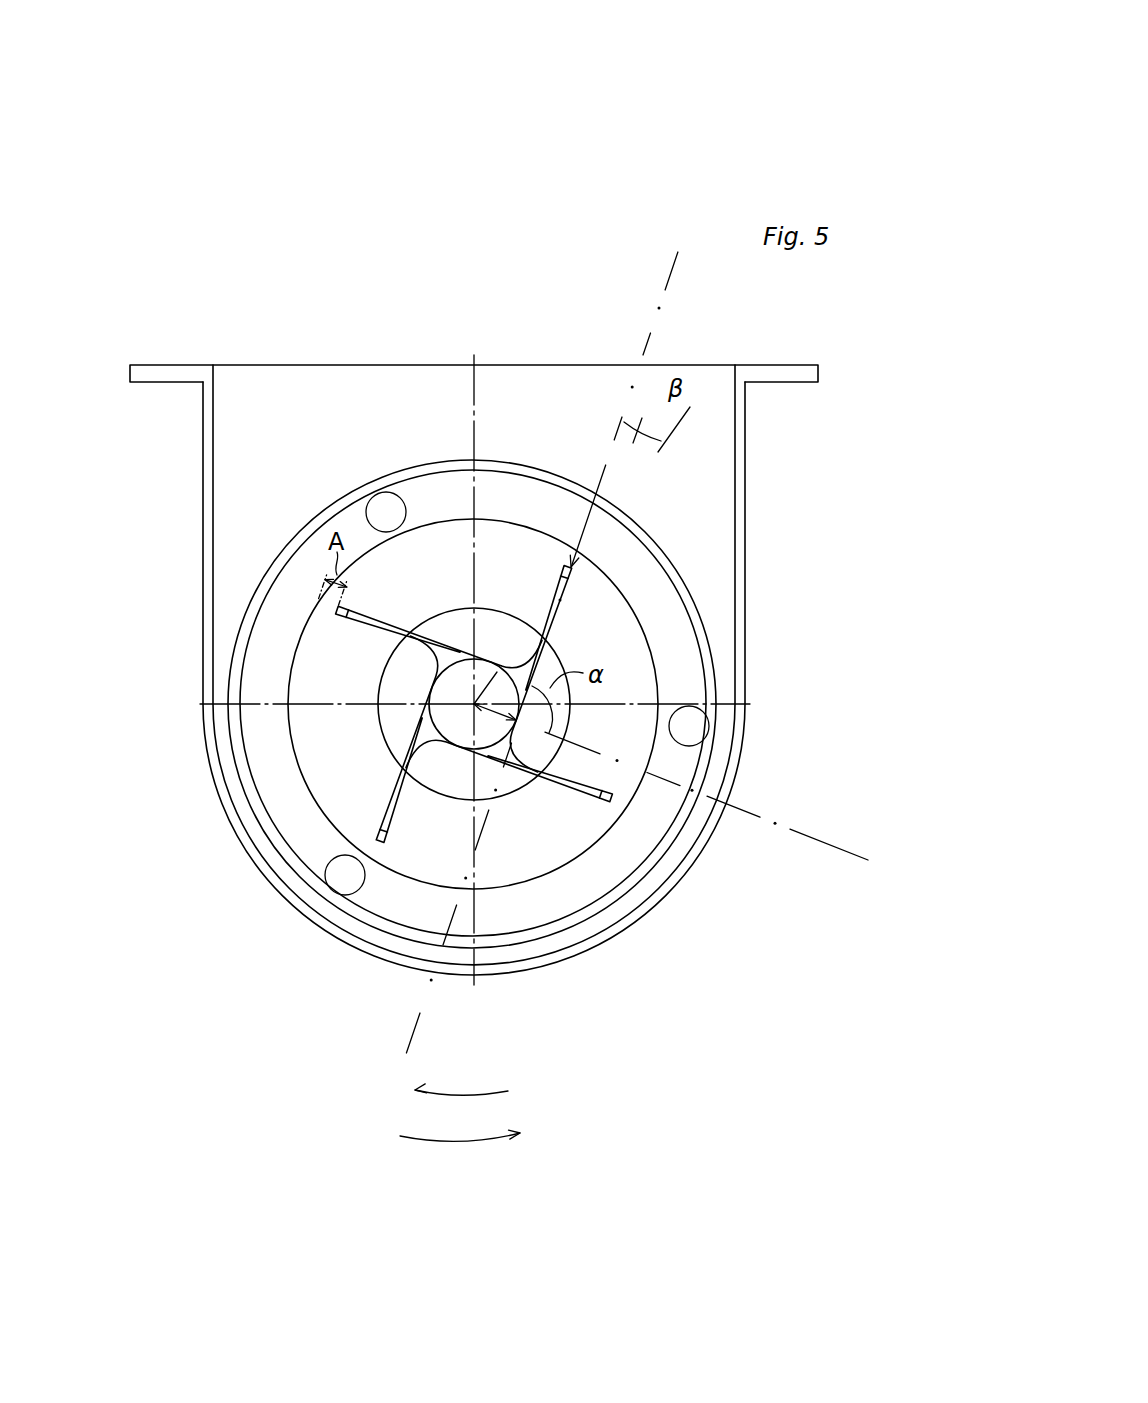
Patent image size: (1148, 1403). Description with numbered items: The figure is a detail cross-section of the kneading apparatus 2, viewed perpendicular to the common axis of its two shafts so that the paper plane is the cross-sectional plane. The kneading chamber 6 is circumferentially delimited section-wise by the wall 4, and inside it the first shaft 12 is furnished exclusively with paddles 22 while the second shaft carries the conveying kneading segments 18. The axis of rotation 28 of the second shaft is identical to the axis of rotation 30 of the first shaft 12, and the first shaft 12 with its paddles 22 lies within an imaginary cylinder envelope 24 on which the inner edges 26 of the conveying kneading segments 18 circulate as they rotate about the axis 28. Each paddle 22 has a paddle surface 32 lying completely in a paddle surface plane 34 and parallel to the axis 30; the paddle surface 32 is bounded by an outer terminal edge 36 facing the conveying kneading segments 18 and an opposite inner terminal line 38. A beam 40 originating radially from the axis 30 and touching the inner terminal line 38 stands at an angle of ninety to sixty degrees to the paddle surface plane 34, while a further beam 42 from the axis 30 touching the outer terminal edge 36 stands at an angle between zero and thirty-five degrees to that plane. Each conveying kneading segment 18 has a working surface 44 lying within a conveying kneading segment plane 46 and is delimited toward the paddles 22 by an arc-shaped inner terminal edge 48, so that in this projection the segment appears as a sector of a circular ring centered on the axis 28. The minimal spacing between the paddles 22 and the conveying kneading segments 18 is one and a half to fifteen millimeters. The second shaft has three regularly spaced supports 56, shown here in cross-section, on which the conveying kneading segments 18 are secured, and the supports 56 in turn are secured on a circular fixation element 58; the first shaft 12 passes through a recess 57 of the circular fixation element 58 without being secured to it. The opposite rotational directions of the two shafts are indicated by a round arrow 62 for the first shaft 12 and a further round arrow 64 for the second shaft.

The kneading apparatus 2 is at (600, 143).
The wall 4 is at (214, 410).
The kneading chamber 6 is at (256, 463).
The first shaft 12 is at (437, 687).
The conveying kneading segments 18 is at (518, 463).
The paddles 22 is at (372, 622).
The imaginary cylinder envelope 24 is at (336, 615).
The inner edges 26 is at (290, 678).
The axis of rotation of the second shaft 28 is at (432, 712).
The axis of rotation of the first shaft 30 is at (318, 757).
The paddle surface 32 is at (565, 598).
The paddle surface plane 34 is at (672, 275).
The outer terminal edge 36 is at (612, 502).
The inner terminal line 38 is at (515, 734).
The beam 40 is at (706, 796).
The further beam 42 is at (740, 347).
The working surface 44 is at (540, 503).
The conveying kneading segment plane 46 is at (685, 577).
The inner terminal edge 48 is at (700, 640).
The supports 56 is at (372, 507).
The recess 57 is at (456, 620).
The circular fixation element 58 is at (440, 545).
The round arrow 62 is at (460, 1094).
The further round arrow 64 is at (460, 1143).